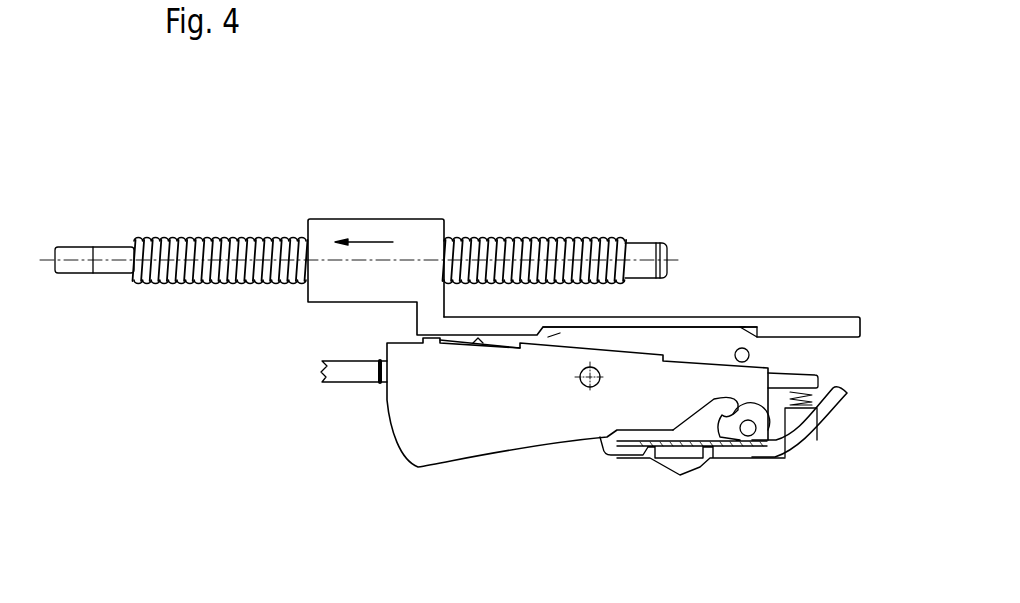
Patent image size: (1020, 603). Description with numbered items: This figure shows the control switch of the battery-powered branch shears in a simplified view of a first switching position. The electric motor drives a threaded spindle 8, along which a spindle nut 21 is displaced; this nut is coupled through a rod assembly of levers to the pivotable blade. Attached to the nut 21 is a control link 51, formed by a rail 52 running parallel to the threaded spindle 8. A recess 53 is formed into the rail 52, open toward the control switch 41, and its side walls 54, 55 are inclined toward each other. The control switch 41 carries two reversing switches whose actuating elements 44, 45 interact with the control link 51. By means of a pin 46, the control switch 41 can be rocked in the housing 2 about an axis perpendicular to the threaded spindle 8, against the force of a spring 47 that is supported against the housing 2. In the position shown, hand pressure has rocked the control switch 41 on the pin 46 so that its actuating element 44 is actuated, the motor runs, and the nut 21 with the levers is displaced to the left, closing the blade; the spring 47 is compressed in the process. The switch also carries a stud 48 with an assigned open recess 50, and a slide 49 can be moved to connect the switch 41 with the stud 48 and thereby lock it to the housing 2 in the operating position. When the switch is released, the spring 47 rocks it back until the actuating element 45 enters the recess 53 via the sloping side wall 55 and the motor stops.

The housing 2 is at (356, 382).
The threaded spindle 8 is at (270, 236).
The spindle nut 21 is at (367, 217).
The control switch 41 is at (393, 453).
The actuating element 44 is at (560, 334).
The actuating element 45 is at (748, 350).
The pin 46 is at (590, 388).
The spring 47 is at (819, 445).
The stud 48 is at (771, 390).
The slide 49 is at (655, 465).
The open recess 50 is at (747, 442).
The control link 51 is at (477, 340).
The rail 52 is at (797, 327).
The recess 53 is at (656, 336).
The side wall 54 is at (548, 337).
The side wall 55 is at (739, 330).